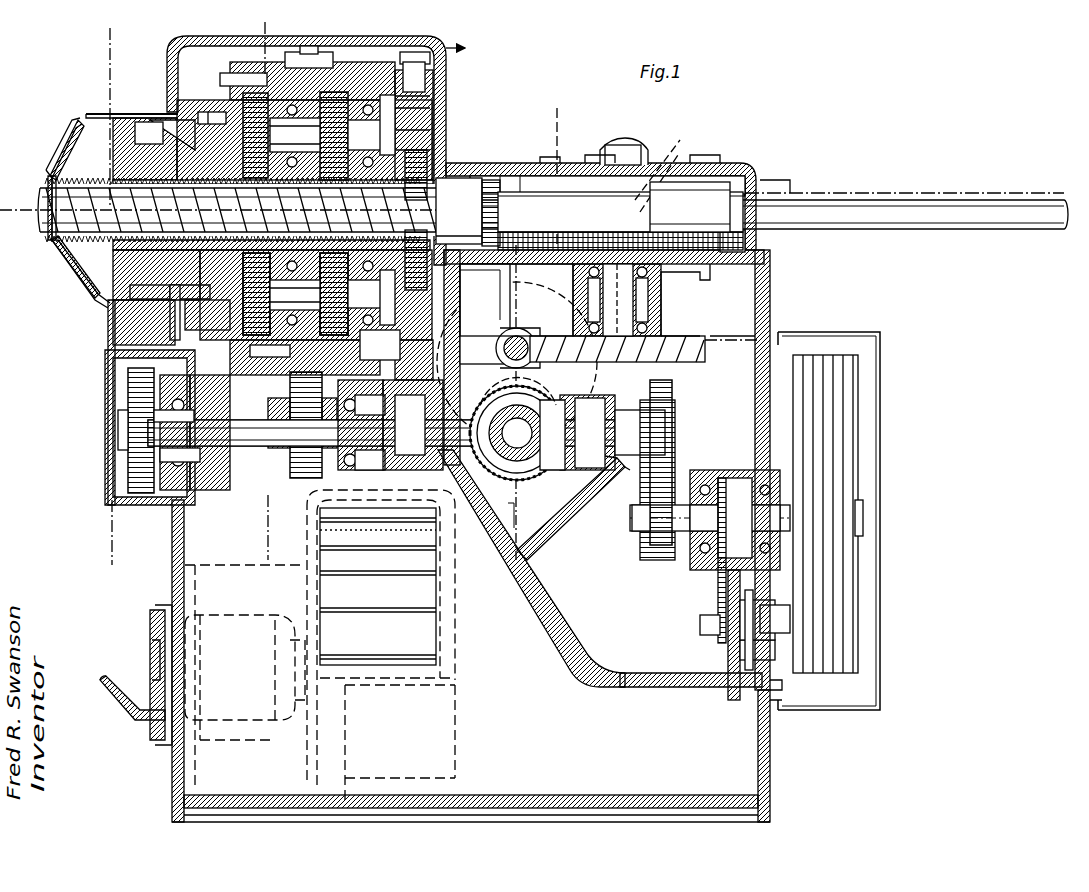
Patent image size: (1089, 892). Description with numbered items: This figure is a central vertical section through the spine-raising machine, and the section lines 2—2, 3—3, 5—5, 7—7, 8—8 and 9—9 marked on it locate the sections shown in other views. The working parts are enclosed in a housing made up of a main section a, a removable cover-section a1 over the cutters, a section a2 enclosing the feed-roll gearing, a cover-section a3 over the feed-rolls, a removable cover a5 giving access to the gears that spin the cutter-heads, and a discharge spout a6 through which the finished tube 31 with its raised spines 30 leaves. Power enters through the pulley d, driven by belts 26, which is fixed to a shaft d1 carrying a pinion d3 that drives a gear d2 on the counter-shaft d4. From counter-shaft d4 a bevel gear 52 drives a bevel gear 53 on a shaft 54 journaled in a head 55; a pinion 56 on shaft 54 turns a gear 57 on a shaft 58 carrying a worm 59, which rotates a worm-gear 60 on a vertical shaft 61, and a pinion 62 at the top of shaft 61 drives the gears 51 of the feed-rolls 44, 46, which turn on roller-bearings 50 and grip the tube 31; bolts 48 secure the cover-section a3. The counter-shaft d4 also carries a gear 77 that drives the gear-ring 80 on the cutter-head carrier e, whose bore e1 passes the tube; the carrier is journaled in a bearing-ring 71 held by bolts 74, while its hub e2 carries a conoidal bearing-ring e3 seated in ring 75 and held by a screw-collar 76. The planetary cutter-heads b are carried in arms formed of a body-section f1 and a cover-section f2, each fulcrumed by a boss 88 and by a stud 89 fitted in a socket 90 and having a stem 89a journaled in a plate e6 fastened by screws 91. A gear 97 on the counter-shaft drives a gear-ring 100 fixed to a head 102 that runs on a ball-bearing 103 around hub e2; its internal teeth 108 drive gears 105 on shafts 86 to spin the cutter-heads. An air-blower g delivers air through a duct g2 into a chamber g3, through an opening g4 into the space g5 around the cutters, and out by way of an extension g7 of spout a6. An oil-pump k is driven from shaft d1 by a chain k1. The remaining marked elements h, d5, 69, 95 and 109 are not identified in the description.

The main housing section a is at (172, 594).
The cover-section a1 is at (440, 75).
The housing section a2 is at (772, 290).
The cover-section for feed-rolls a3 is at (722, 172).
The removable cover a5 is at (108, 412).
The discharge spout a6 is at (110, 315).
The cutter-head b is at (468, 212).
The shaft key h is at (459, 227).
The cutter-head carrier e is at (395, 95).
The bore of carrier e1 is at (128, 183).
The cylindrical hub e2 is at (125, 248).
The conoidal bearing-ring e3 is at (118, 270).
The head / plate e6 is at (425, 85).
The recessed body-section of arm f1 is at (420, 95).
The cover-section of arm f2 is at (215, 110).
The air-blower g is at (590, 120).
The duct g2 is at (445, 605).
The chamber g3 is at (245, 677).
The opening g4 is at (385, 448).
The closed space g5 is at (440, 130).
The spout extension g7 is at (108, 443).
The pulley d is at (855, 605).
The shaft d1 is at (680, 540).
The gear d2 is at (665, 455).
The pinion d3 is at (658, 540).
The counter-shaft d4 is at (415, 446).
The shaft collar d5 is at (195, 465).
The oil-pump k is at (745, 625).
The chain k1 is at (718, 570).
The section line 2— 2 is at (905, 224).
The section line 3— 3 is at (770, 225).
The section line 5— 5 is at (432, 487).
The section line 7— 7 is at (238, 28).
The section line 8— 8 is at (138, 48).
The section line 9— 9 is at (410, 360).
The belts 26 is at (845, 450).
The spines 30 is at (52, 240).
The tube or pipe 31 is at (48, 228).
The feed-rolls 44 is at (750, 245).
The second pair of feed-rolls 46 is at (530, 195).
The bolts 48 is at (625, 145).
The roller-bearings 50 is at (770, 268).
The gear 51 is at (566, 232).
The bevel gear 52 is at (562, 465).
The bevel gear 53 is at (484, 470).
The shaft 54 is at (548, 433).
The head 55 is at (552, 506).
The pinion 56 is at (528, 478).
The gear 57 is at (478, 310).
The shaft 58 is at (495, 350).
The worm 59 is at (512, 330).
The worm-gear 60 is at (705, 358).
The vertical shaft 61 is at (655, 304).
The pinion 62 is at (630, 240).
The stop 69 is at (775, 182).
The bearing-ring 71 is at (381, 639).
The bolts 74 is at (400, 360).
The conoidal bearing-ring 75 is at (135, 113).
The adjustable screw-collar 76 is at (116, 140).
The gear 77 is at (300, 478).
The gear-ring 80 is at (303, 55).
The shaft 86 is at (300, 88).
The boss 88 is at (225, 310).
The stud 89 is at (420, 110).
The stem 89a is at (430, 120).
The socket 90 is at (395, 118).
The screws 91 is at (405, 60).
The pin 95 is at (660, 170).
The gear 97 is at (125, 470).
The gear-ring 100 is at (290, 380).
The head 102 is at (130, 330).
The ball-bearing 103 is at (168, 118).
The gears 105 is at (272, 133).
The internal gear-teeth 108 is at (205, 335).
The hub 109 is at (270, 410).